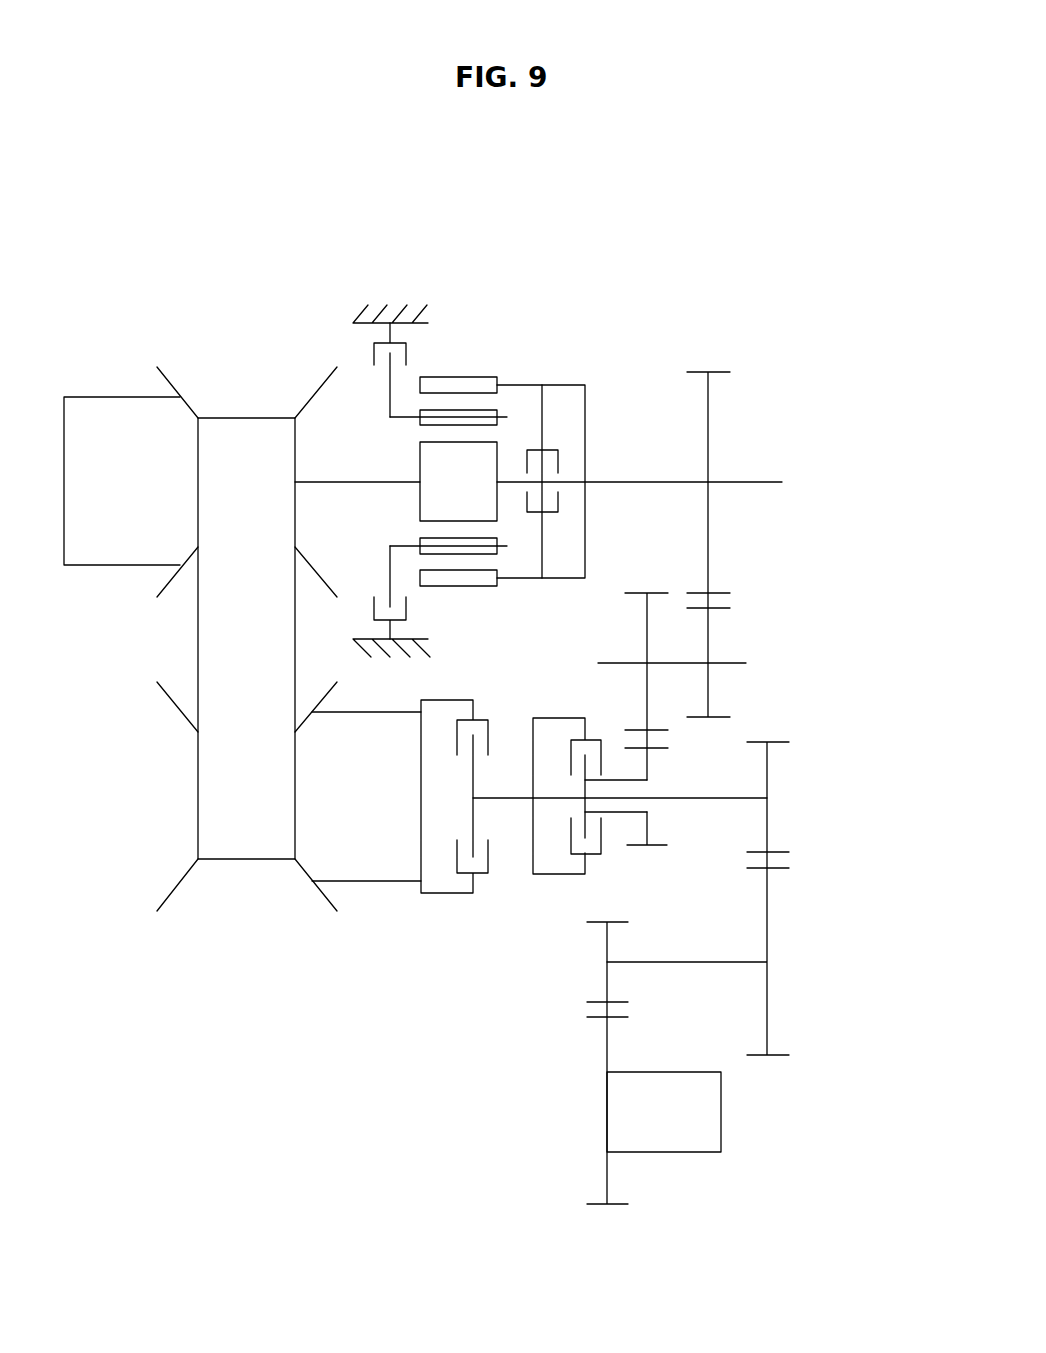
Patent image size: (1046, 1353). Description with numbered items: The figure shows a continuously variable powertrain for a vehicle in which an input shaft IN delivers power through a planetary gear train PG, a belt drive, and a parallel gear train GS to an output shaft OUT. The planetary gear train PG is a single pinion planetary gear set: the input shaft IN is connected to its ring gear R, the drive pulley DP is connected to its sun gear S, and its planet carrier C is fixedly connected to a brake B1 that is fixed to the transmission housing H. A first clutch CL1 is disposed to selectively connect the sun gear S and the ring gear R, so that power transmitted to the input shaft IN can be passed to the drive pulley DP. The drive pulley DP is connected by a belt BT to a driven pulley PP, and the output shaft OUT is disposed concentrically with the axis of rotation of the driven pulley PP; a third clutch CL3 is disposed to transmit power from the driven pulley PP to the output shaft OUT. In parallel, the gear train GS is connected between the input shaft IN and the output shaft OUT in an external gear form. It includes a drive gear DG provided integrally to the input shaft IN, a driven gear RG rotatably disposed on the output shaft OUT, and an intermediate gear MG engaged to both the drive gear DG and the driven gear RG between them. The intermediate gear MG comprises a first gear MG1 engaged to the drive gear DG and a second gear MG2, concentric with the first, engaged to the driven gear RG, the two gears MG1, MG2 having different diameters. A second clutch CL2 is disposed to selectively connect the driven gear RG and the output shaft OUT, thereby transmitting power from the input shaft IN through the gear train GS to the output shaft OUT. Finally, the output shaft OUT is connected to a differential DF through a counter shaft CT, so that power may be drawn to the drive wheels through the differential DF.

The belt BT is at (210, 633).
The drive pulley DP is at (172, 378).
The driven pulley PP is at (175, 890).
The input shaft IN is at (747, 481).
The planetary gear train PG is at (456, 419).
The ring gear R is at (447, 380).
The planet carrier C is at (503, 417).
The sun gear S is at (427, 506).
The brake B1 is at (368, 346).
The transmission housing H is at (386, 312).
The first clutch CL1 is at (553, 446).
The second clutch CL2 is at (569, 859).
The third clutch CL3 is at (456, 875).
The gear train GS is at (710, 369).
The drive gear DG is at (722, 593).
The intermediate gear MG is at (767, 686).
The first gear MG1 is at (722, 608).
The second gear MG2 is at (662, 733).
The driven gear RG is at (657, 847).
The output shaft OUT is at (732, 798).
The counter shaft CT is at (770, 962).
The differential DF is at (721, 1116).